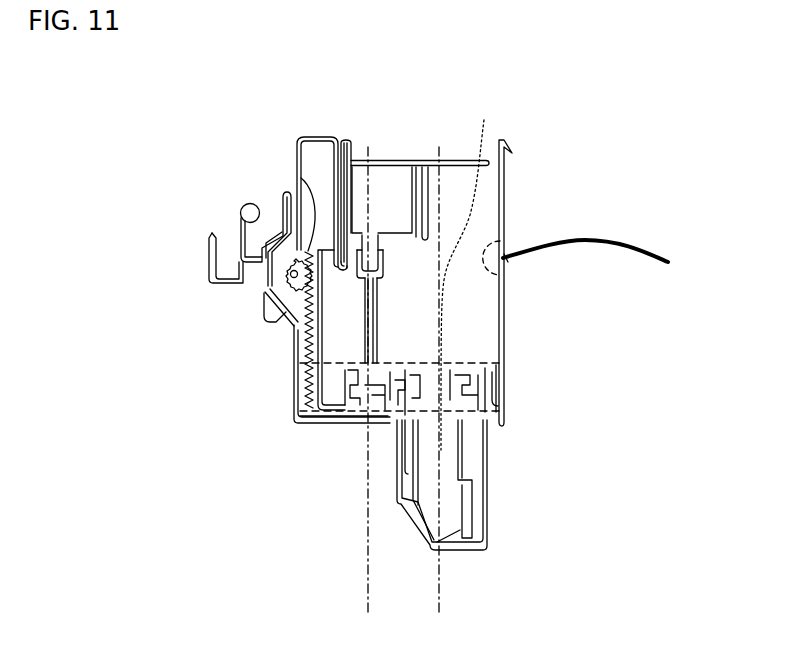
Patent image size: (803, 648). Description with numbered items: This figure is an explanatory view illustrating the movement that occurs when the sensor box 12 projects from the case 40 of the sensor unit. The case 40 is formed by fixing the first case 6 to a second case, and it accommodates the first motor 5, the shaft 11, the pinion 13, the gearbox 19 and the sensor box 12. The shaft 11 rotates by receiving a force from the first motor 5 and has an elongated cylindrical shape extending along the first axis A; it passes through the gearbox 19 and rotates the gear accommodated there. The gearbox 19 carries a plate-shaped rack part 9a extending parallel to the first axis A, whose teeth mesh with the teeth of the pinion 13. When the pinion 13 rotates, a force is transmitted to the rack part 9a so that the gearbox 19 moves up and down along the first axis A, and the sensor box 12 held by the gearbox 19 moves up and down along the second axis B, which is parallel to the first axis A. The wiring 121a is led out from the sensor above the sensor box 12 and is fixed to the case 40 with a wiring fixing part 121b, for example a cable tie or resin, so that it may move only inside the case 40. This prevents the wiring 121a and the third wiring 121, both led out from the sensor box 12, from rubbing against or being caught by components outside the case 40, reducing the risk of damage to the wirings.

The first motor 5 is at (394, 160).
The first case 6 is at (345, 139).
The rack part 9a is at (300, 178).
The shaft 11 is at (363, 348).
The sensor box 12 is at (484, 470).
The pinion 13 is at (265, 293).
The gearbox 19 is at (310, 432).
The case 40 is at (506, 326).
The third wiring 121 is at (605, 241).
The wiring 121a is at (484, 118).
The wiring fixing part 121b is at (512, 242).
The first axis A is at (366, 527).
The second axis B is at (439, 583).